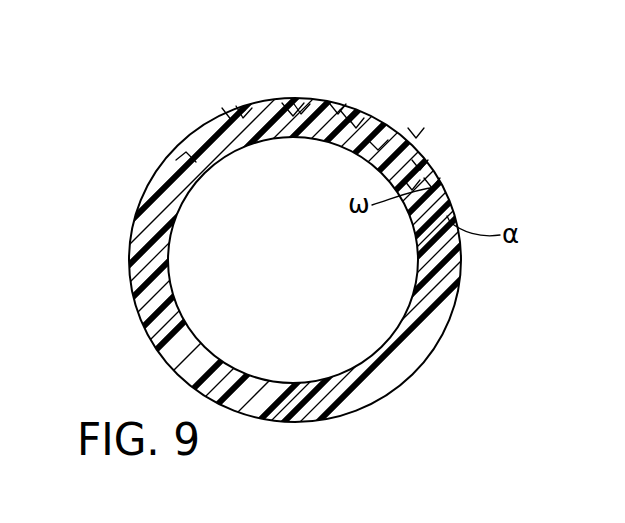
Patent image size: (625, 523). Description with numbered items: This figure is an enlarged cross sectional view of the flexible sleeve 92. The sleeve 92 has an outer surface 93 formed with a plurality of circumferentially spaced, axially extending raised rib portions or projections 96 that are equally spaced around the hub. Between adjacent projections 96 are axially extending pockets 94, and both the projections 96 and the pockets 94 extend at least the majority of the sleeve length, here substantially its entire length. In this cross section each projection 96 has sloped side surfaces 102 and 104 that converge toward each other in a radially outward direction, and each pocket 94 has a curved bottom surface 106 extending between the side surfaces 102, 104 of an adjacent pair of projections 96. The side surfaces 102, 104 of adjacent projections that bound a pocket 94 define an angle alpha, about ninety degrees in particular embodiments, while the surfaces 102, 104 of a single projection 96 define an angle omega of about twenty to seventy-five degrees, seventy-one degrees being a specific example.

The sleeve 92 is at (118, 226).
The outer surface 93 is at (145, 197).
The pocket 94 is at (230, 110).
The projection 96 is at (184, 163).
The sloped side surface 102 is at (293, 106).
The sloped side surface 104 is at (241, 108).
The curved bottom surface 106 is at (301, 106).